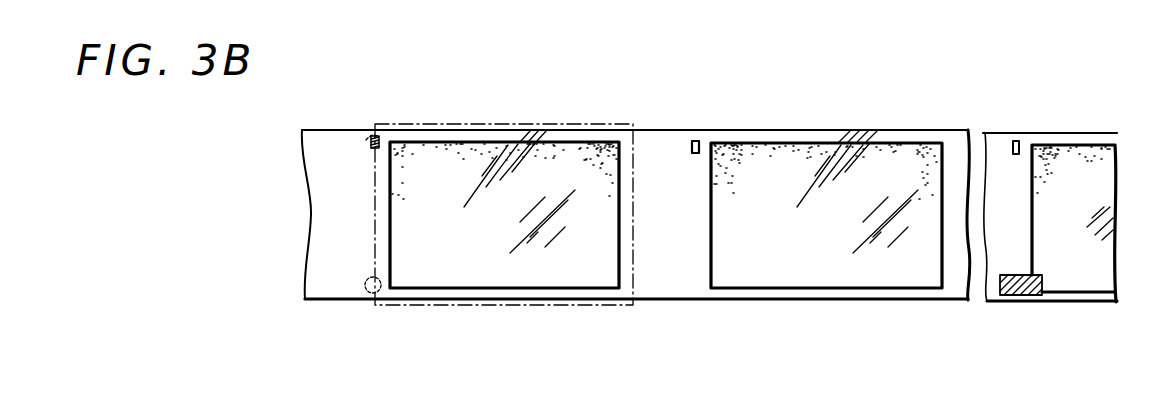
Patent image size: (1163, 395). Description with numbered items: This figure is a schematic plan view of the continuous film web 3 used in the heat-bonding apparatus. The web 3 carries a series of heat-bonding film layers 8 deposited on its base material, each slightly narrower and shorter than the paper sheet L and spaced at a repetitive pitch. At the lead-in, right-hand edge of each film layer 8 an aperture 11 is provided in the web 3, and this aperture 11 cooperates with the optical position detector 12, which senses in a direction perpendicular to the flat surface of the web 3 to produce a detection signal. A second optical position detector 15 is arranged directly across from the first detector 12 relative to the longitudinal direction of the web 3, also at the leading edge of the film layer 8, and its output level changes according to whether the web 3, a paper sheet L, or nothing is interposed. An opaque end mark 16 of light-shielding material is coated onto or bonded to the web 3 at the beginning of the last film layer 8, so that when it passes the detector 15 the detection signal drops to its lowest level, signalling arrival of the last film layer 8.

The film web 3 is at (850, 132).
The heat-bonding film layer 8 is at (460, 289).
The aperture 11 is at (382, 138).
The optical position detector 12 is at (372, 142).
The second optical position detector 15 is at (370, 282).
The opaque end mark 16 is at (1006, 297).
The paper sheet L is at (545, 306).